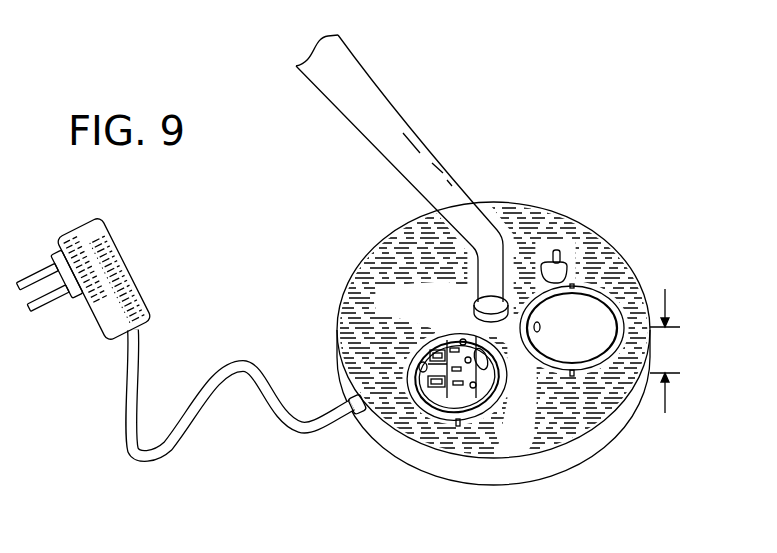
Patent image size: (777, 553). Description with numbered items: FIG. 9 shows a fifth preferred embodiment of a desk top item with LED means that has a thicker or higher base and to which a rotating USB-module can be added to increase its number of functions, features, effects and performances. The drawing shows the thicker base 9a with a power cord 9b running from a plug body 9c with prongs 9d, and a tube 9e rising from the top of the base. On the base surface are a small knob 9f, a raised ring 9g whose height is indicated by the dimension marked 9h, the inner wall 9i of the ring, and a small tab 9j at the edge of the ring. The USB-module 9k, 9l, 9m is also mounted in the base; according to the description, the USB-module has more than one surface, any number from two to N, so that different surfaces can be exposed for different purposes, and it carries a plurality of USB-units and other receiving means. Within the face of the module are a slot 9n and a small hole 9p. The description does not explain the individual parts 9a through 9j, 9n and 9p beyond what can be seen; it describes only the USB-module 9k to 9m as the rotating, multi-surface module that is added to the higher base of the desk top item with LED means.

The base 9a is at (552, 436).
The power cord 9b is at (242, 360).
The plug body 9c is at (118, 236).
The plug prongs 9d is at (47, 314).
The support tube 9e is at (493, 250).
The knob 9f is at (558, 252).
The ring 9g is at (598, 292).
The ring height 9h is at (666, 365).
The ring inner wall 9i is at (602, 322).
The ring tab 9j is at (574, 376).
The USB-module 9k is at (492, 410).
The USB-module 9l is at (478, 336).
The USB-module 9m is at (432, 357).
The outlet slot 9n is at (456, 390).
The outlet hole 9p is at (419, 367).